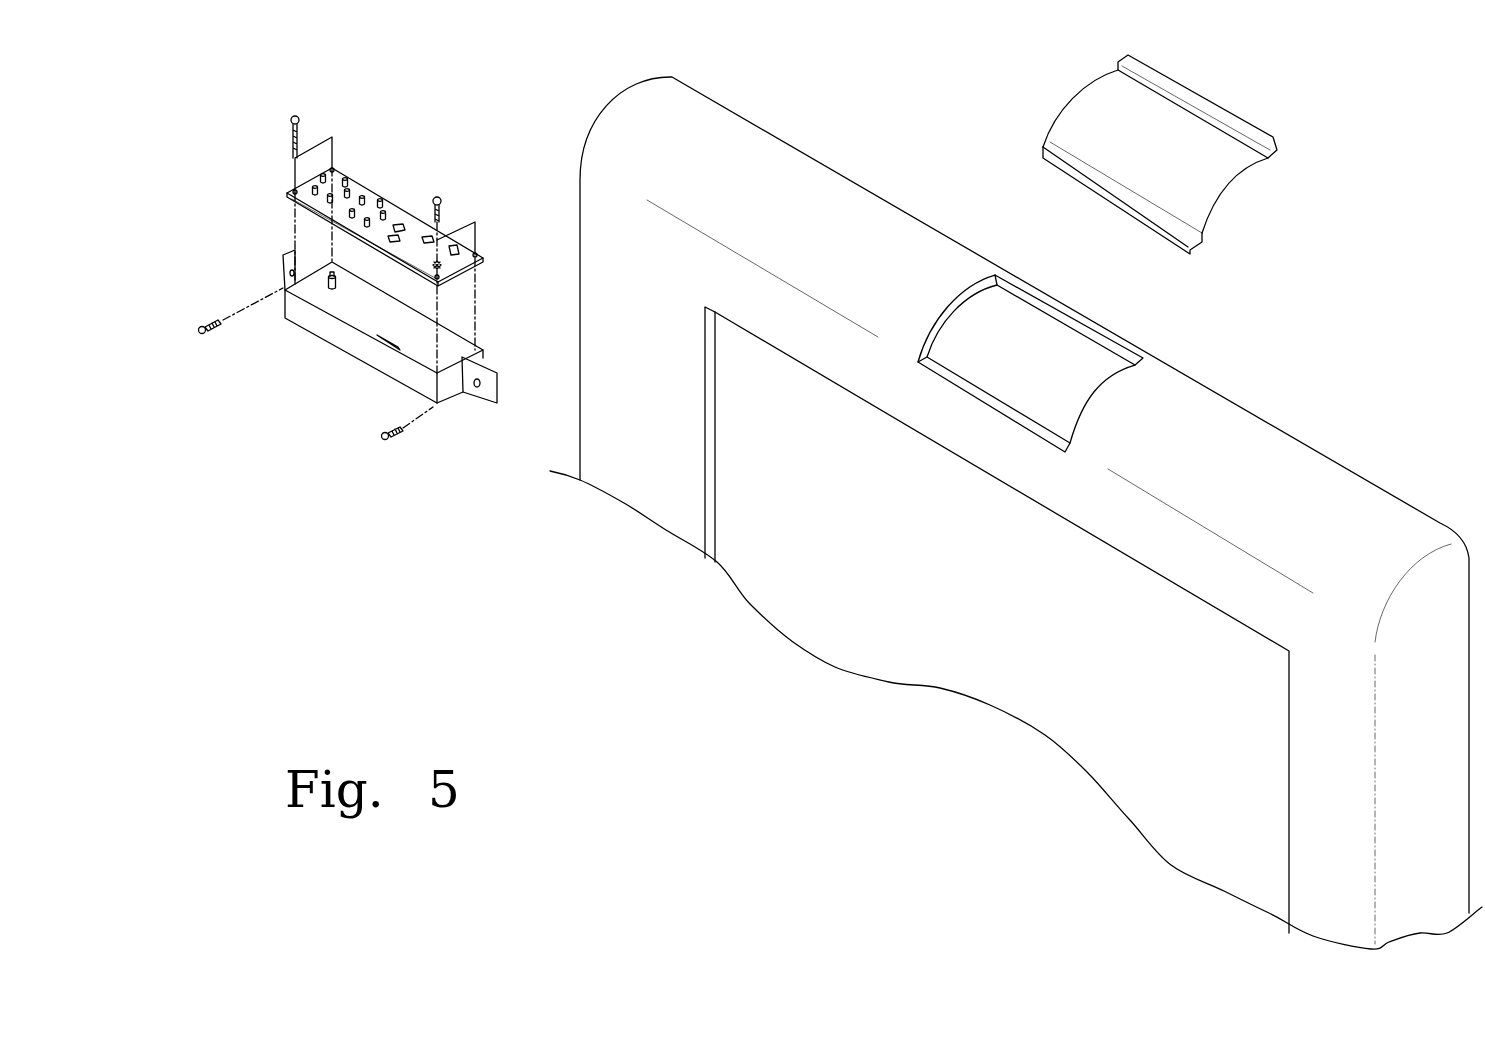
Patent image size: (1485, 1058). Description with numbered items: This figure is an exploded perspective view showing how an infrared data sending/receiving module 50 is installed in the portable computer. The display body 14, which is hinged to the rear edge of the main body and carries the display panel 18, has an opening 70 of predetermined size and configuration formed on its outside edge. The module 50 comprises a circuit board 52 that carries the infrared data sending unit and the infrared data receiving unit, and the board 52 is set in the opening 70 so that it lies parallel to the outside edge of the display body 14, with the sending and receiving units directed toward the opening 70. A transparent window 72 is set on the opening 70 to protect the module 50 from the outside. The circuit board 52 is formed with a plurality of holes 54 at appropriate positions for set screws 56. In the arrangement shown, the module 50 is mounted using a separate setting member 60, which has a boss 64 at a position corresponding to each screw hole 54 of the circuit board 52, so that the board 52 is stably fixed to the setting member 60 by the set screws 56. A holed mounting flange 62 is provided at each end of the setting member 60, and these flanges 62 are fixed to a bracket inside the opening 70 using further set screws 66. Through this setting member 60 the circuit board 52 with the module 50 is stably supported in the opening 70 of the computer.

The display body 14 is at (651, 541).
The display panel 18 is at (822, 638).
The infrared data sending/receiving module 50 is at (280, 194).
The circuit board 52 is at (360, 190).
The holes 54 is at (293, 190).
The set screws 56 is at (438, 197).
The setting member 60 is at (371, 365).
The mounting flange 62 is at (487, 405).
The boss 64 is at (327, 290).
The set screws 66 is at (205, 336).
The opening 70 is at (1082, 355).
The transparent window 72 is at (1288, 115).